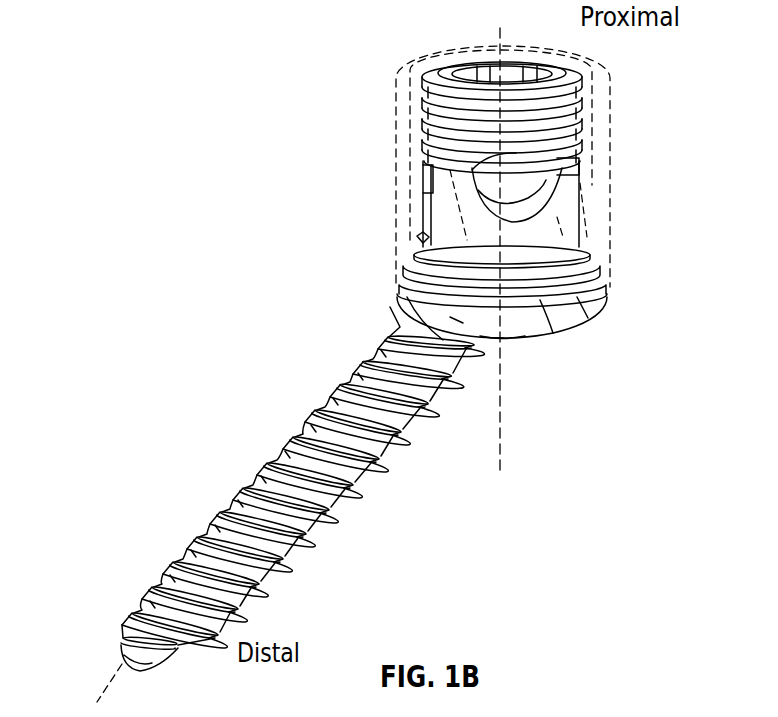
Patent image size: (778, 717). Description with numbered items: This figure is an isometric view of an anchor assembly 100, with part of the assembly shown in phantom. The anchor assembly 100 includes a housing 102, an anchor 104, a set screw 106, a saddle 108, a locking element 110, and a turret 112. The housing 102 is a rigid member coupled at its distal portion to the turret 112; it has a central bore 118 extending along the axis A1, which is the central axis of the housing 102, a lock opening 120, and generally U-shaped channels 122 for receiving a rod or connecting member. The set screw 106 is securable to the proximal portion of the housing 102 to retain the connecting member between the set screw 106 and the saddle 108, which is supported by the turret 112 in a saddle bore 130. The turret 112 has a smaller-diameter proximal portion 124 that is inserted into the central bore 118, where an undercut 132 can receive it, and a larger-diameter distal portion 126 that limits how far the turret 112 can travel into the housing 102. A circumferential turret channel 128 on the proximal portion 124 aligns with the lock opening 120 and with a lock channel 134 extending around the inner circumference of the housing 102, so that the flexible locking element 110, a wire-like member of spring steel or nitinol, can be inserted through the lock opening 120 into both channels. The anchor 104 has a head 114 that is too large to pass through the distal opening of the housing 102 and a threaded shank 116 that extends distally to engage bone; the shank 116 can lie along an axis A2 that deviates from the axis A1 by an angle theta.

The anchor assembly 100 is at (284, 70).
The housing 102 is at (616, 66).
The anchor 104 is at (232, 481).
The set screw 106 is at (510, 66).
The saddle 108 is at (598, 262).
The locking element 110 is at (588, 305).
The turret 112 is at (606, 315).
The head 114 is at (519, 340).
The shank 116 is at (343, 517).
The central bore 118 is at (440, 64).
The lock opening 120 is at (403, 295).
The channels 122 is at (570, 180).
The proximal portion 124 is at (522, 332).
The distal portion 126 is at (601, 313).
The turret channel 128 is at (407, 258).
The saddle bore 130 is at (422, 237).
The undercut 132 is at (414, 246).
The lock channel 134 is at (404, 287).
The axis A1 is at (503, 424).
The axis A2 is at (118, 670).